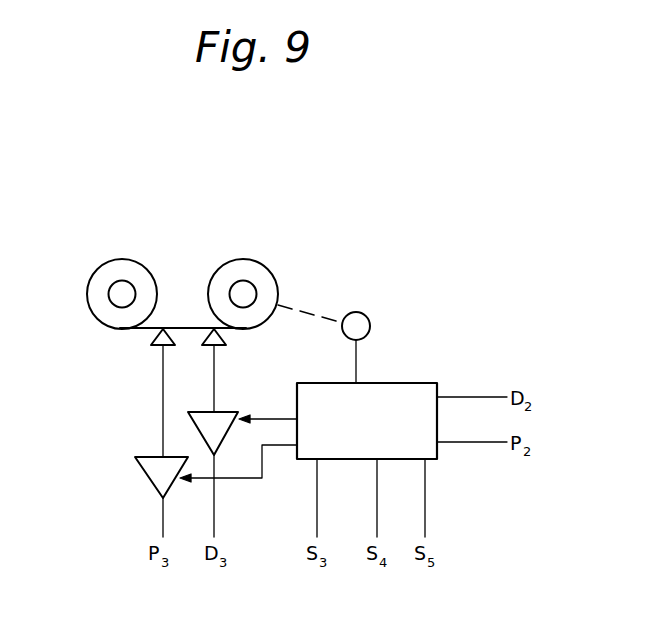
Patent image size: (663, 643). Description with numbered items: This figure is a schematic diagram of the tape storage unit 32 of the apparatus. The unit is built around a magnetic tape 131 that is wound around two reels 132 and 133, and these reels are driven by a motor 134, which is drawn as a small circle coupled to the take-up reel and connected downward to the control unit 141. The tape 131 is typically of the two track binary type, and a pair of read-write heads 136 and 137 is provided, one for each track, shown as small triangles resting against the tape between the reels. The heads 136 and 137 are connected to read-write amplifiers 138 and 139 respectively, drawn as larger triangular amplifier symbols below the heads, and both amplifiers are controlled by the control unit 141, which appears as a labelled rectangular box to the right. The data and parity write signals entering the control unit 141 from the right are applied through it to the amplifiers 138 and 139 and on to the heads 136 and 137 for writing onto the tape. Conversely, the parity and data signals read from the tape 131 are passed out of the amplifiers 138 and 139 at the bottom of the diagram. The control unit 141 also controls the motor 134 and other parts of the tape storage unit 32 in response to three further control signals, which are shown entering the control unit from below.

The tape storage unit 32 is at (425, 280).
The magnetic tape 131 is at (186, 327).
The reel 132 is at (118, 258).
The reel 133 is at (263, 264).
The motor 134 is at (357, 312).
The read-write head 136 is at (152, 337).
The read-write head 137 is at (202, 340).
The read-write amplifier 138 is at (142, 472).
The read-write amplifier 139 is at (190, 425).
The control unit 141 is at (426, 383).